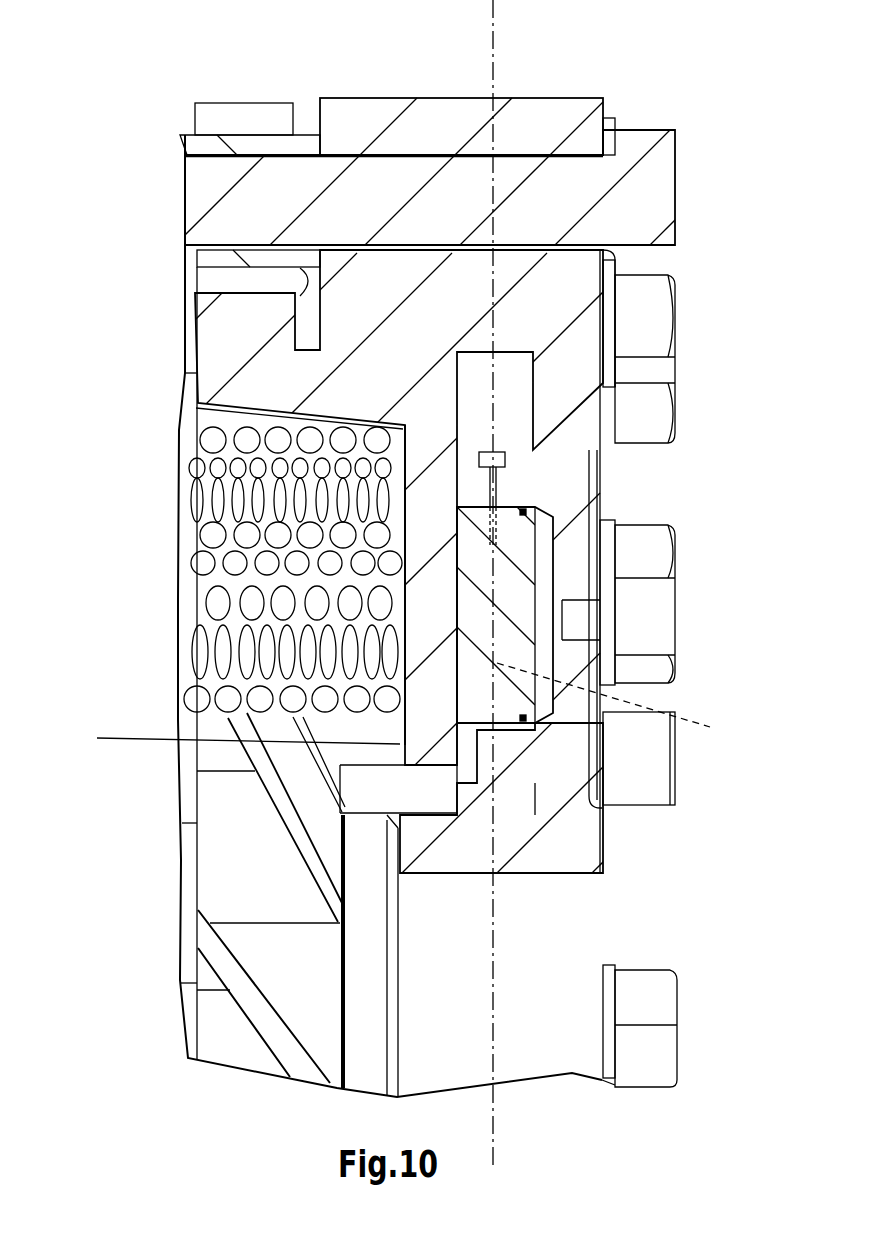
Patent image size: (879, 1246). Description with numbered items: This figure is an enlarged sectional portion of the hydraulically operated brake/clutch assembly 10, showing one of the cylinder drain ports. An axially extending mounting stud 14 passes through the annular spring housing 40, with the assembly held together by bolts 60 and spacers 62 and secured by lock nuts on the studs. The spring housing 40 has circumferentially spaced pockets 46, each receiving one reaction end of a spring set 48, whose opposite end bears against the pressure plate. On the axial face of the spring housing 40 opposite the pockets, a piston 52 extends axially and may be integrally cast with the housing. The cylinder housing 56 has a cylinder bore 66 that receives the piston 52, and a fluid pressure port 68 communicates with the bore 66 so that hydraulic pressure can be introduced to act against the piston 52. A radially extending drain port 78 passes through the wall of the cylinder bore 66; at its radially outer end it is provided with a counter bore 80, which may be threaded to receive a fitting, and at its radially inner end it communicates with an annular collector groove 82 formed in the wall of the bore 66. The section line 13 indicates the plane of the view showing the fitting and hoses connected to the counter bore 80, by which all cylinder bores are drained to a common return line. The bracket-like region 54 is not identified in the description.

The hydraulically operated brake/clutch assembly 10 is at (126, 112).
The section line 13 is at (493, 20).
The mounting studs 14 is at (648, 407).
The spring housing 40 is at (250, 356).
The pockets 46 is at (260, 911).
The spring set 48 is at (240, 519).
The pistons 52 is at (515, 580).
The base member 54 is at (537, 723).
The cylinder housing 56 is at (583, 98).
The bolts 60 is at (660, 210).
The spacers 62 is at (262, 135).
The cylinder bores 66 is at (455, 672).
The fluid pressure ports 68 is at (582, 618).
The drain port 78 is at (563, 490).
The counter bore 80 is at (502, 463).
The collector groove 82 is at (618, 701).